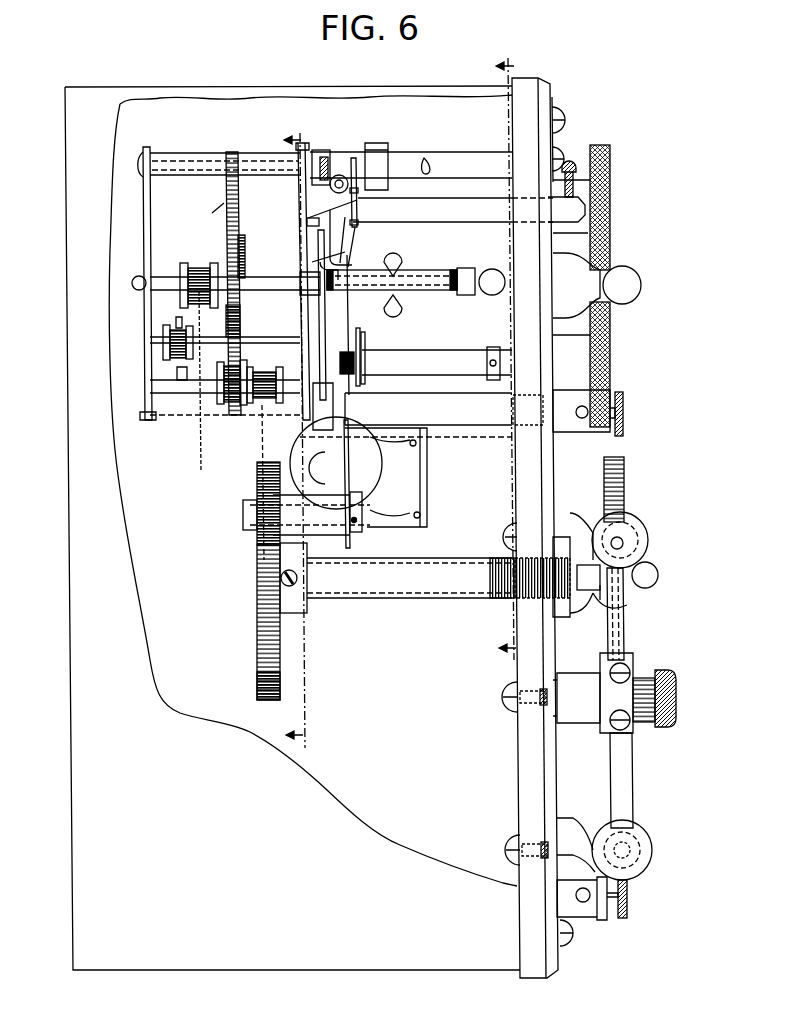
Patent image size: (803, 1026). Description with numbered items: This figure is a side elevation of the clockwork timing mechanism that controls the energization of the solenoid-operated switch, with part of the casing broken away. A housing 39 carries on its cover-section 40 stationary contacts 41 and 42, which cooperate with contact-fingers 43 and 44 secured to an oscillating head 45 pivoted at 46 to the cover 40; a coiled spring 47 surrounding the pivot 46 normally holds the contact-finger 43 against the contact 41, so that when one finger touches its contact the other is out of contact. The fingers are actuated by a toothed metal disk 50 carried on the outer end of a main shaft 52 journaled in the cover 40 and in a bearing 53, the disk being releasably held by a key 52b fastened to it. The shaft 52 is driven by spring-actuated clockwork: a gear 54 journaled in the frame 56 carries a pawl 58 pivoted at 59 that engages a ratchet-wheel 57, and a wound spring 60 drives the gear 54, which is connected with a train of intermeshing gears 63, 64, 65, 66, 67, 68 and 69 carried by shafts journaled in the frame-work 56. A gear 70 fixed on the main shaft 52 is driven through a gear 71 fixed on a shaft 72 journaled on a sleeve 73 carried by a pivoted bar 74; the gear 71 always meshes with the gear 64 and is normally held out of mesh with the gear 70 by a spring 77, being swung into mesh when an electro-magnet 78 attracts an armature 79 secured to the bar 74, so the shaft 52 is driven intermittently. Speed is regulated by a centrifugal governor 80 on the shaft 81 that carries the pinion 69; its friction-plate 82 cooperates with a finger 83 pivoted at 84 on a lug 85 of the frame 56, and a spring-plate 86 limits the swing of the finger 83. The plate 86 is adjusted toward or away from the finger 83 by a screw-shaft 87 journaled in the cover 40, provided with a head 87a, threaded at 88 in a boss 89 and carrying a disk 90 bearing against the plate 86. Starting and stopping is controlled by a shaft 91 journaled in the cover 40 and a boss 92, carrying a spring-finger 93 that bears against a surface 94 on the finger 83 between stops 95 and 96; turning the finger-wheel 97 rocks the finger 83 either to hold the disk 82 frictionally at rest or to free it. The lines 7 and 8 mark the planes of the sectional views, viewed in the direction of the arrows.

The section line 7 is at (303, 430).
The section line 8 is at (512, 357).
The housing 39 is at (72, 462).
The cover-section 40 is at (542, 965).
The contact 41 is at (559, 517).
The contact 42 is at (602, 843).
The contact-finger 43 is at (617, 627).
The contact-finger 44 is at (624, 793).
The oscillating head 45 is at (633, 733).
The pivot 46 is at (668, 678).
The coiled spring 47 is at (636, 672).
The metal disk 50 is at (620, 481).
The main shaft 52 is at (654, 577).
The key 52b is at (626, 606).
The bearing 53 is at (365, 594).
The gear 54 is at (245, 194).
The frame 56 is at (297, 148).
The ratchet-wheel 57 is at (247, 240).
The pawl 58 is at (246, 330).
The pivot 59 is at (243, 320).
The spring 60 is at (238, 194).
The gear 63 is at (222, 396).
The gear 64 is at (257, 452).
The gear 65 is at (281, 373).
The gear 66 is at (183, 460).
The gear 67 is at (165, 343).
The gear 68 is at (190, 311).
The pinion 69 is at (183, 265).
The gear 70 is at (257, 632).
The gear 71 is at (258, 533).
The shaft 72 is at (366, 522).
The sleeve 73 is at (280, 517).
The bar 74 is at (350, 472).
The spring 77 is at (326, 185).
The electro-magnet 78 is at (381, 498).
The armature 79 is at (428, 438).
The centrifugal governor 80 is at (402, 270).
The shaft 81 is at (141, 279).
The friction-plate 82 is at (320, 249).
The finger 83 is at (347, 250).
The pivot 84 is at (347, 174).
The lug 85 is at (337, 175).
The spring-plate 86 is at (362, 346).
The screw-shaft 87 is at (458, 363).
The head 87a is at (611, 355).
The threaded end 88 is at (354, 373).
The boss 89 is at (322, 358).
The disk 90 is at (365, 352).
The shaft 91 is at (487, 213).
The boss 92 is at (310, 222).
The spring-finger 93 is at (358, 206).
The surface 94 is at (425, 158).
The stop 95 is at (362, 222).
The stop 96 is at (372, 145).
The finger-wheel 97 is at (610, 173).